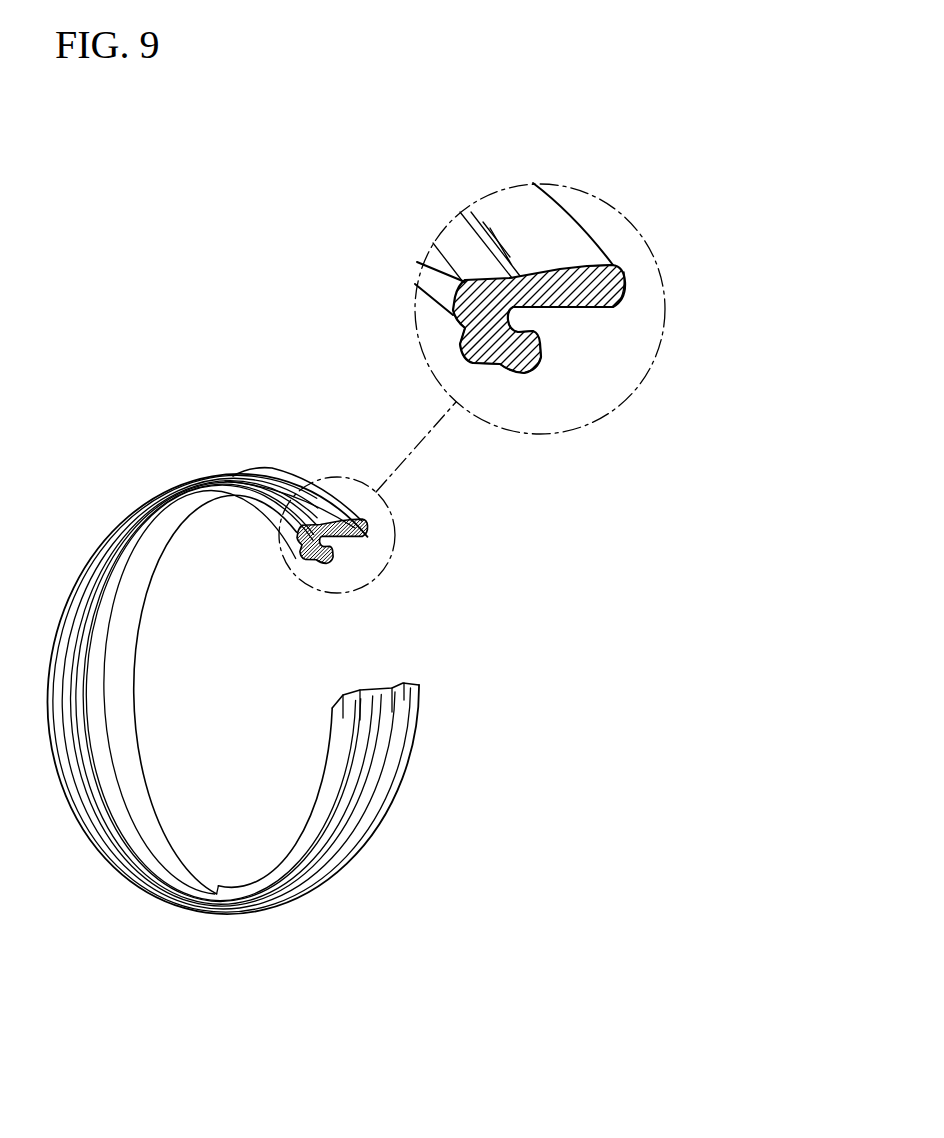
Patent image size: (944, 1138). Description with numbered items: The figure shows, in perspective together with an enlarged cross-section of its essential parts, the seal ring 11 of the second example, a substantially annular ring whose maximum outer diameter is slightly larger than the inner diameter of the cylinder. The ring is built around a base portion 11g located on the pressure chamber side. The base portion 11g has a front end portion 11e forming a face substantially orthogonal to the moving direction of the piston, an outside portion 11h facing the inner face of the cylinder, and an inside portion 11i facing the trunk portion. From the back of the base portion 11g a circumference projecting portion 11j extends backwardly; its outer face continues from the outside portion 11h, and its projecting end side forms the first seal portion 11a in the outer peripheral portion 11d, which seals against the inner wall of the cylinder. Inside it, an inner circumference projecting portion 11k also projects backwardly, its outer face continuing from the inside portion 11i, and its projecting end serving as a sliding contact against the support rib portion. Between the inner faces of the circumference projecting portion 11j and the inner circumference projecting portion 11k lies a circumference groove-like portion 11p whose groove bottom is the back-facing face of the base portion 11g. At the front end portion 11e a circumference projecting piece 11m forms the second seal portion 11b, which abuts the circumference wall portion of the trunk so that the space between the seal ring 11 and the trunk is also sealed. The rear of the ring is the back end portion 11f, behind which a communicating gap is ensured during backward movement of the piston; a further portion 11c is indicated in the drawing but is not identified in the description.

The seal ring 11 is at (130, 503).
The first seal portion 11a is at (587, 262).
The second seal portion 11b is at (432, 310).
The lower side surface 11c is at (523, 375).
The outer peripheral portion 11d is at (517, 205).
The front end portion 11e is at (460, 340).
The back end portion 11f is at (627, 290).
The base portion 11g is at (457, 230).
The outside portion 11h is at (457, 230).
The inside portion 11i is at (465, 370).
The circumference projecting portion 11j is at (600, 260).
The inner circumference projecting portion 11k is at (537, 353).
The circumference projecting piece 11m is at (422, 277).
The circumference groove-like portion 11p is at (543, 322).